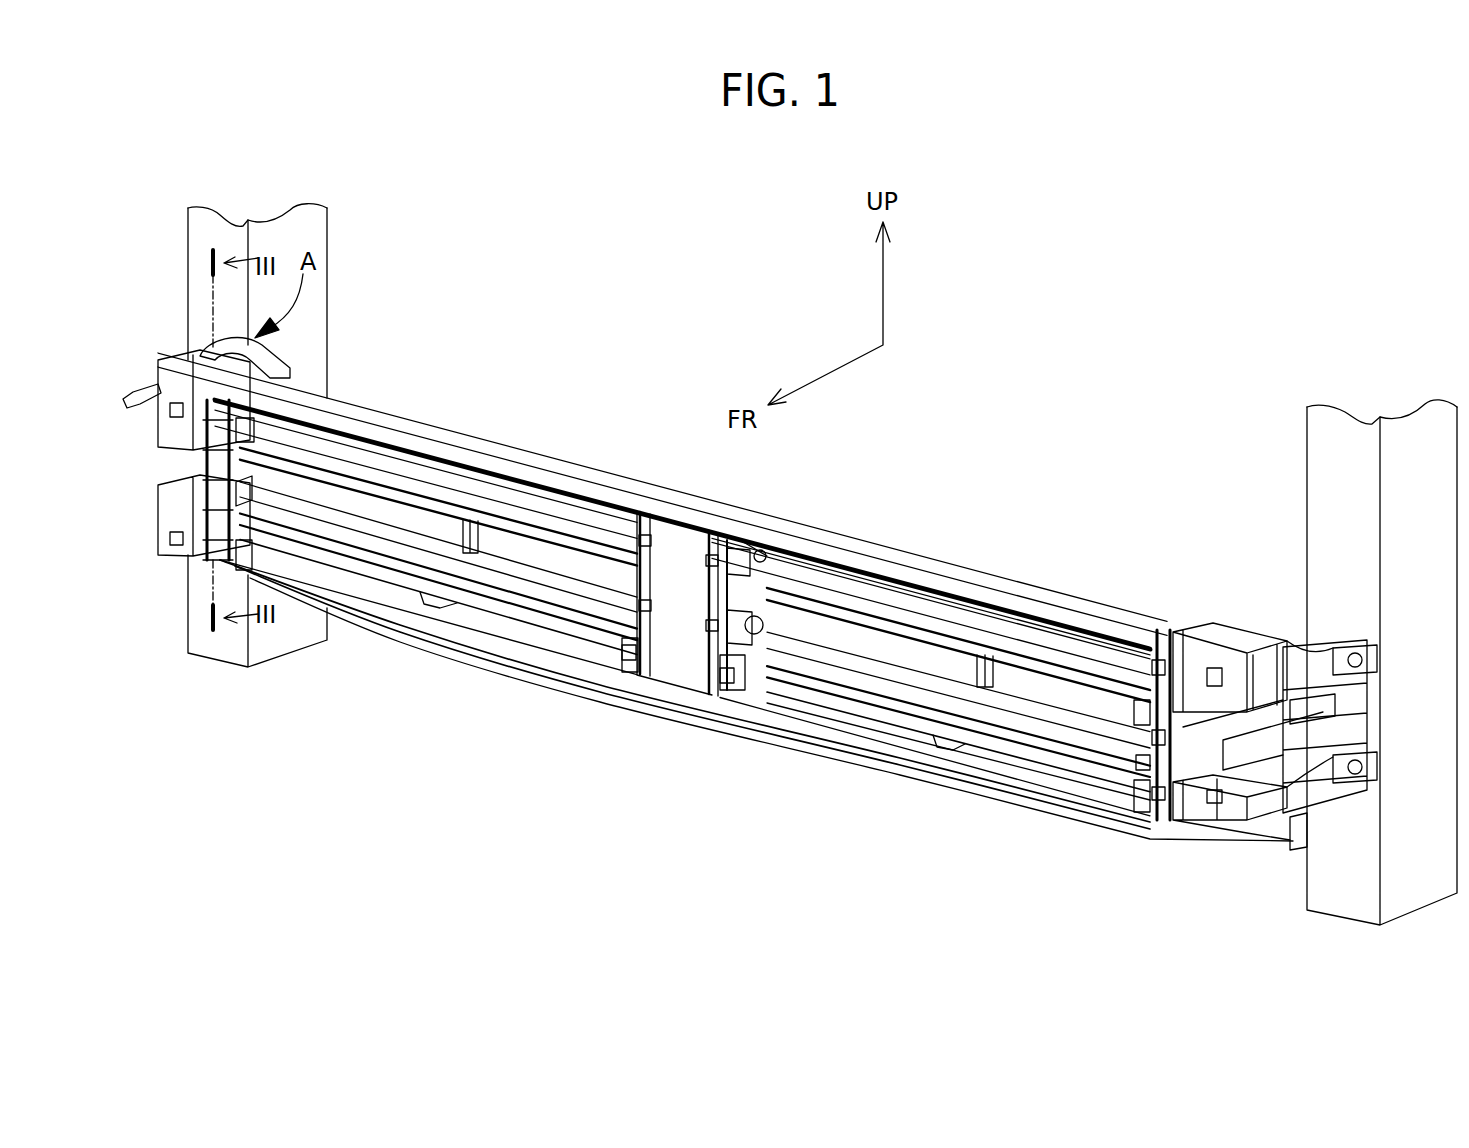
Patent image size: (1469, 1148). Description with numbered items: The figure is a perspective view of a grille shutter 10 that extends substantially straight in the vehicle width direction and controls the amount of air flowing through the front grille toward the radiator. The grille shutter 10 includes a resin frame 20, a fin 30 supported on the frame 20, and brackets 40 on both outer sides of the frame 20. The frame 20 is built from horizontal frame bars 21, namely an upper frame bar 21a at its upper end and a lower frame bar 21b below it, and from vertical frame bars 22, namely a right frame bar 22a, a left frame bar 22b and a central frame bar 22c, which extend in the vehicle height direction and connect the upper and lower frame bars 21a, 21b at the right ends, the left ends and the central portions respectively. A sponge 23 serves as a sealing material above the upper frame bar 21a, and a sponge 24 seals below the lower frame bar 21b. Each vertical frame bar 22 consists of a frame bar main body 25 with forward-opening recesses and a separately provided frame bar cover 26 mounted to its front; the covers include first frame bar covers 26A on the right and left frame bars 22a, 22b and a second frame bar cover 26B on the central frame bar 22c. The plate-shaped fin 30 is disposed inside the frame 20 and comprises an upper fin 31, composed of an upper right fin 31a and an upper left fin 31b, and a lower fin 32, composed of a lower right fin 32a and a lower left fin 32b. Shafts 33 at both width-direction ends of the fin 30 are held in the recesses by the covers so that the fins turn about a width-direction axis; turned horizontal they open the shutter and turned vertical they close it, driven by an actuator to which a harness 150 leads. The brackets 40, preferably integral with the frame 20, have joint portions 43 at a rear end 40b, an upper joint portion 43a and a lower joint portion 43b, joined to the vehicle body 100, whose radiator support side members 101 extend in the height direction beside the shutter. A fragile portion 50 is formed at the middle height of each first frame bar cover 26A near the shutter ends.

The grille shutter 10 is at (908, 541).
The frame 20 is at (597, 495).
The horizontal frame bars 21 is at (931, 642).
The upper frame bar 21a is at (833, 566).
The lower frame bar 21b is at (850, 716).
The vertical frame bars 22 is at (702, 569).
The right frame bar 22a is at (240, 416).
The left frame bar 22b is at (1150, 647).
The central frame bar 22c is at (678, 660).
The sponge 23 is at (553, 477).
The sponge 24 is at (510, 652).
The frame bar main body 25 is at (245, 499).
The frame bar cover 26 is at (638, 705).
The first frame bar cover 26A is at (210, 563).
The second frame bar cover 26B is at (630, 657).
The fin 30 is at (483, 487).
The upper fin 31 is at (695, 540).
The upper right fin 31a is at (397, 456).
The upper left fin 31b is at (937, 611).
The lower fin 32 is at (695, 663).
The lower right fin 32a is at (393, 537).
The lower left fin 32b is at (930, 680).
The shafts 33 is at (247, 427).
The brackets 40 is at (168, 428).
The rear end 40b is at (1367, 712).
The joint portions 43 is at (1373, 663).
The upper joint portion 43a is at (1377, 645).
The lower joint portion 43b is at (1377, 757).
The fragile portion 50 is at (220, 472).
The vehicle body 100 is at (822, 564).
The radiator support side members 101 is at (308, 222).
The harness 150 is at (137, 386).